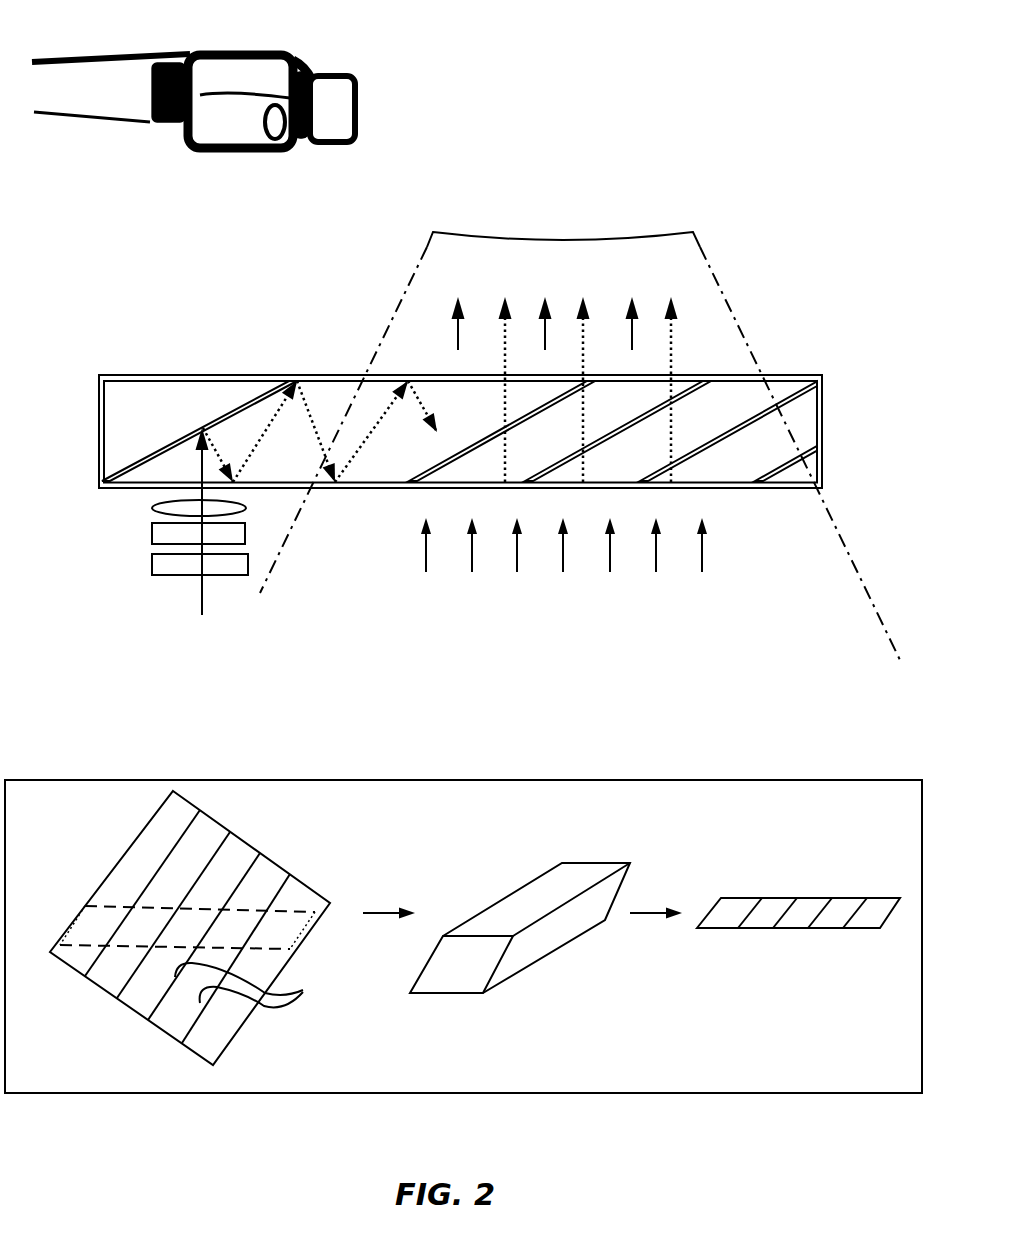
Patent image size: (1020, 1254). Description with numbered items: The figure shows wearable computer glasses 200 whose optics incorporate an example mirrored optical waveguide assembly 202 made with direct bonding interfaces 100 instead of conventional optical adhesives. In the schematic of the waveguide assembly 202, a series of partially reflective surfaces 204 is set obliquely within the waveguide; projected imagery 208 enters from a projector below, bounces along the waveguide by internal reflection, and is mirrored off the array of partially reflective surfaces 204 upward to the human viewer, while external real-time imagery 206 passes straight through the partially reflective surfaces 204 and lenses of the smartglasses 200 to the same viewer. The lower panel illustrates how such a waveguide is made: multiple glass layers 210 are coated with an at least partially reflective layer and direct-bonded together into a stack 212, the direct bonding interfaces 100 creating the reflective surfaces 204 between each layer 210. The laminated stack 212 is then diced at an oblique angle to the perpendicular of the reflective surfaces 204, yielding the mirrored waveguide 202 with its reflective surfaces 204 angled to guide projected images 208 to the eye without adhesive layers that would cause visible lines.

The direct bonding interface 100 is at (256, 985).
The wearable computer glasses 200 is at (157, 46).
The waveguide assembly 202 is at (147, 373).
The partially reflective surfaces 204 is at (805, 396).
The external real-time imagery 206 is at (564, 560).
The projected imagery 208 is at (202, 558).
The glass layers 210 is at (198, 848).
The stack 212 is at (143, 808).